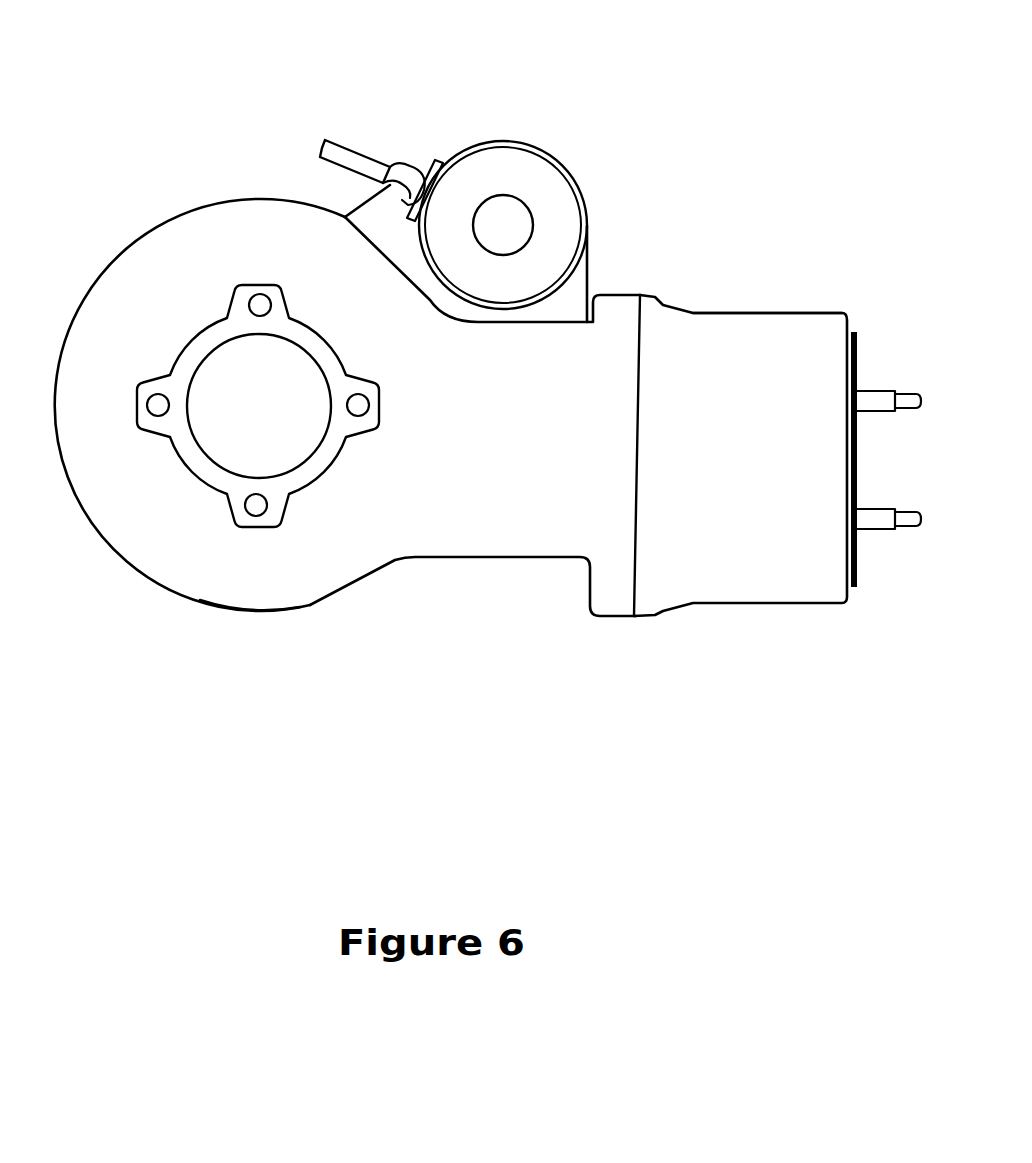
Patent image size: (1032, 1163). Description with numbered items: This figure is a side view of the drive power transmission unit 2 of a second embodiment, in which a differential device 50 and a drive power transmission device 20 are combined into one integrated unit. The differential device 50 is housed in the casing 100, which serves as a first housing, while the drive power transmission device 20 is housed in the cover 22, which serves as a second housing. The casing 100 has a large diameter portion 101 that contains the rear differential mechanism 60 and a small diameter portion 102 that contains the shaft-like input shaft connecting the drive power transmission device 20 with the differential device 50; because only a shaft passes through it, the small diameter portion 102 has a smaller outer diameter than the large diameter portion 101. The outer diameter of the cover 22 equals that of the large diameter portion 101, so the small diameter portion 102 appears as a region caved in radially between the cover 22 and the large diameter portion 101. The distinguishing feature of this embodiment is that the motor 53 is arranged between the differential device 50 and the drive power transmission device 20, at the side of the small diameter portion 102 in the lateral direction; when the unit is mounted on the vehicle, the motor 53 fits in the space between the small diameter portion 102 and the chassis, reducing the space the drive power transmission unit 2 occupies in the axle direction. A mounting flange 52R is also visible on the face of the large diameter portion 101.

The drive power transmission unit 2 is at (635, 157).
The drive power transmission device 20 is at (777, 480).
The cover 22 is at (750, 312).
The differential device 50 is at (400, 588).
The right mounting flange 52R is at (208, 333).
The motor 53 is at (503, 141).
The rear differential mechanism 60 is at (112, 557).
The casing 100 is at (305, 205).
The large diameter portion 101 is at (242, 613).
The small diameter portion 102 is at (513, 560).